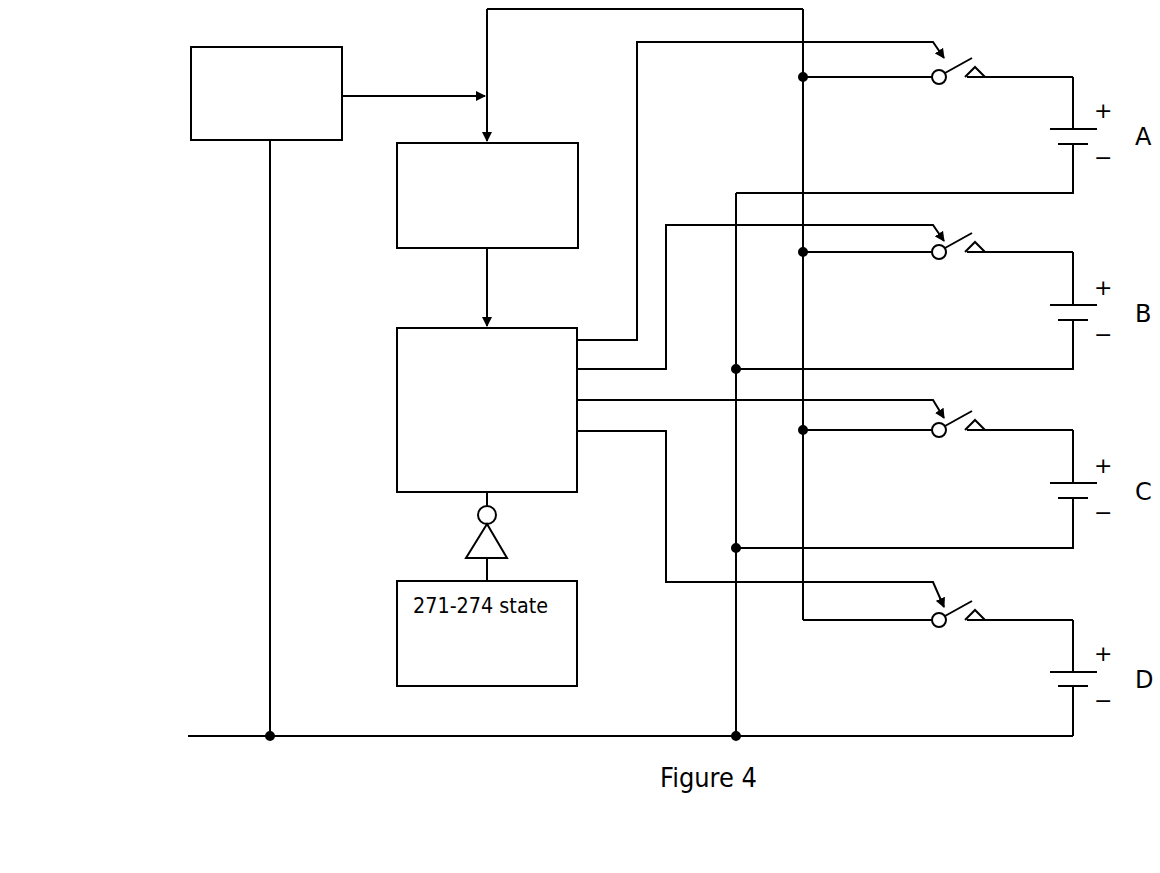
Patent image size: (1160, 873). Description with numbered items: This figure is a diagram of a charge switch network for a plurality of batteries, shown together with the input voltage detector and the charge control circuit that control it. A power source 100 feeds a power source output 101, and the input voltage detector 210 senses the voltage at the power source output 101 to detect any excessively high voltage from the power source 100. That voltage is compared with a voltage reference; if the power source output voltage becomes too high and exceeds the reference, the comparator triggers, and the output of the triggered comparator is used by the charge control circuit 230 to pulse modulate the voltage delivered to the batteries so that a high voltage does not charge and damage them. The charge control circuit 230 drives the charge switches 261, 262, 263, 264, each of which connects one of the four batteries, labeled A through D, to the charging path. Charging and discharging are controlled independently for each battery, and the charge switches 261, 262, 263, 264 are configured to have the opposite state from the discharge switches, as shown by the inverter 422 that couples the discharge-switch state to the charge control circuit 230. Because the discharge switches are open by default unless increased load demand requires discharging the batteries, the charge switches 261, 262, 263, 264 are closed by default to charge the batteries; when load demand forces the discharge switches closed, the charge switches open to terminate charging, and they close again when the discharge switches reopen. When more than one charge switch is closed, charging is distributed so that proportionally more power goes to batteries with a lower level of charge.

The power source 100 is at (265, 46).
The power source output 101 is at (432, 96).
The input voltage detector 210 is at (456, 143).
The charge control circuit 230 is at (459, 328).
The inverter 422 is at (471, 546).
The charge switch 261 is at (938, 90).
The charge switch 262 is at (938, 269).
The charge switch 263 is at (938, 449).
The charge switch 264 is at (938, 634).